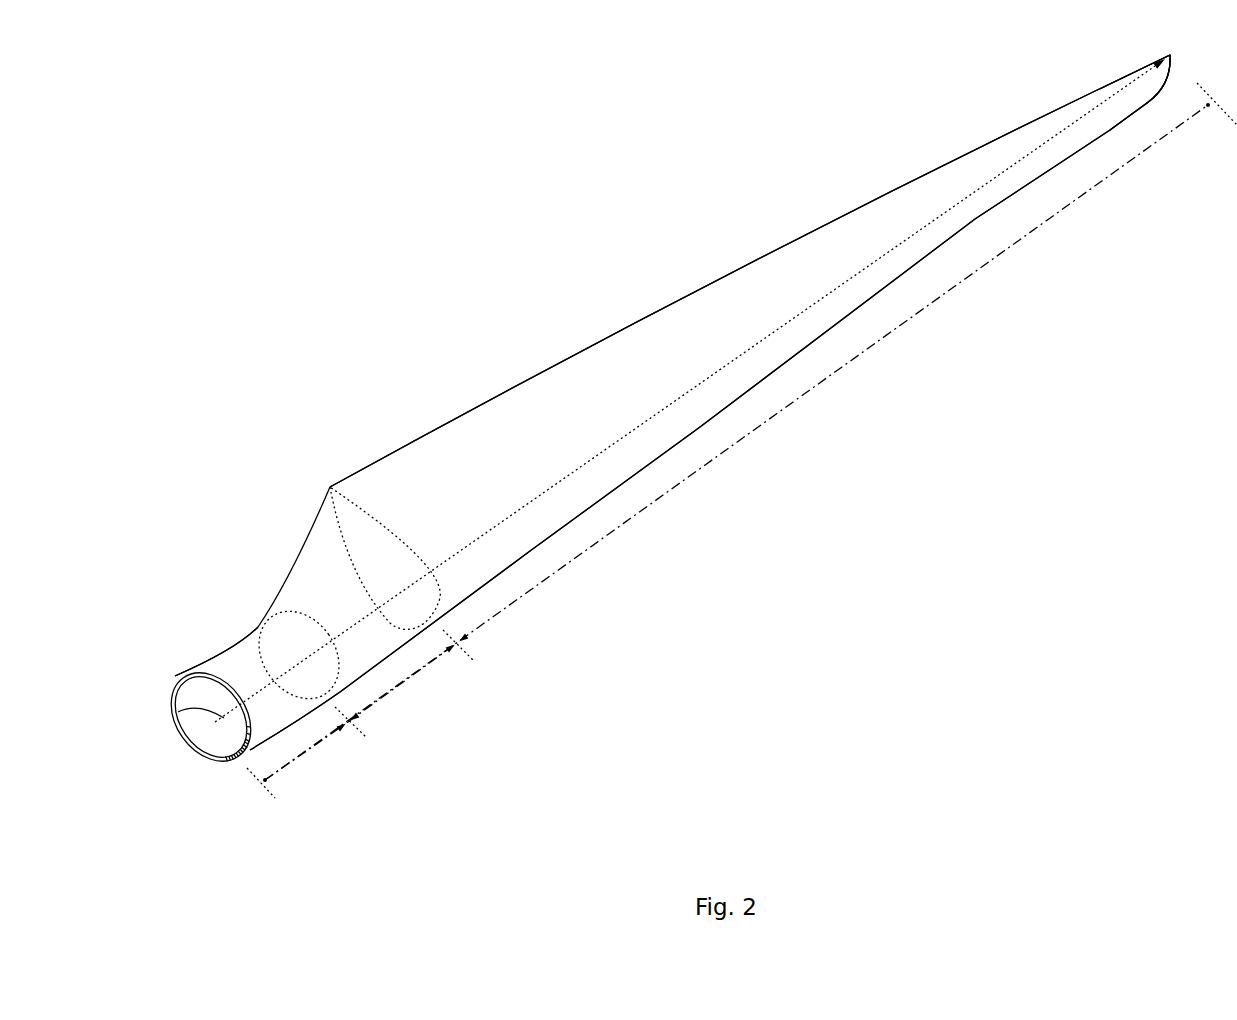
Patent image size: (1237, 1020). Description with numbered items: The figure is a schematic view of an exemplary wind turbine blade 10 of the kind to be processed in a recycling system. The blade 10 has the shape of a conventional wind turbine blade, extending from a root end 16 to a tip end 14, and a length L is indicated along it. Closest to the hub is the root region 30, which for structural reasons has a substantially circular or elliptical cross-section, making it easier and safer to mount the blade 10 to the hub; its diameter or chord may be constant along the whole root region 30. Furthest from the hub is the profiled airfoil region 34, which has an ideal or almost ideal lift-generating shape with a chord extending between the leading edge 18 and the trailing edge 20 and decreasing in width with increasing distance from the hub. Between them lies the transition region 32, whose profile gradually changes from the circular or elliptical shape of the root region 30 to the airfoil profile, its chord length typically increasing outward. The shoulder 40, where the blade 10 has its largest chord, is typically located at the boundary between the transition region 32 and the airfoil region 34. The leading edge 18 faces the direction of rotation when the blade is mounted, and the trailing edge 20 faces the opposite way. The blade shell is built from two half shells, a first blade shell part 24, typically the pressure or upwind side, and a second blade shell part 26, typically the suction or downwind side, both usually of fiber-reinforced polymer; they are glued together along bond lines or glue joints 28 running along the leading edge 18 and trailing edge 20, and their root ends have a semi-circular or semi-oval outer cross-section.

The wind turbine blade 10 is at (405, 240).
The tip end 14 is at (1170, 55).
The root end 16 is at (172, 683).
The leading edge 18 is at (870, 298).
The trailing edge 20 is at (758, 258).
The first blade shell part 24 is at (187, 679).
The second blade shell part 26 is at (207, 746).
The bond lines or glue joints 28 is at (175, 676).
The blade length L is at (178, 713).
The root region 30 is at (310, 753).
The transition region 32 is at (407, 678).
The airfoil region 34 is at (760, 428).
The shoulder 40 is at (330, 487).